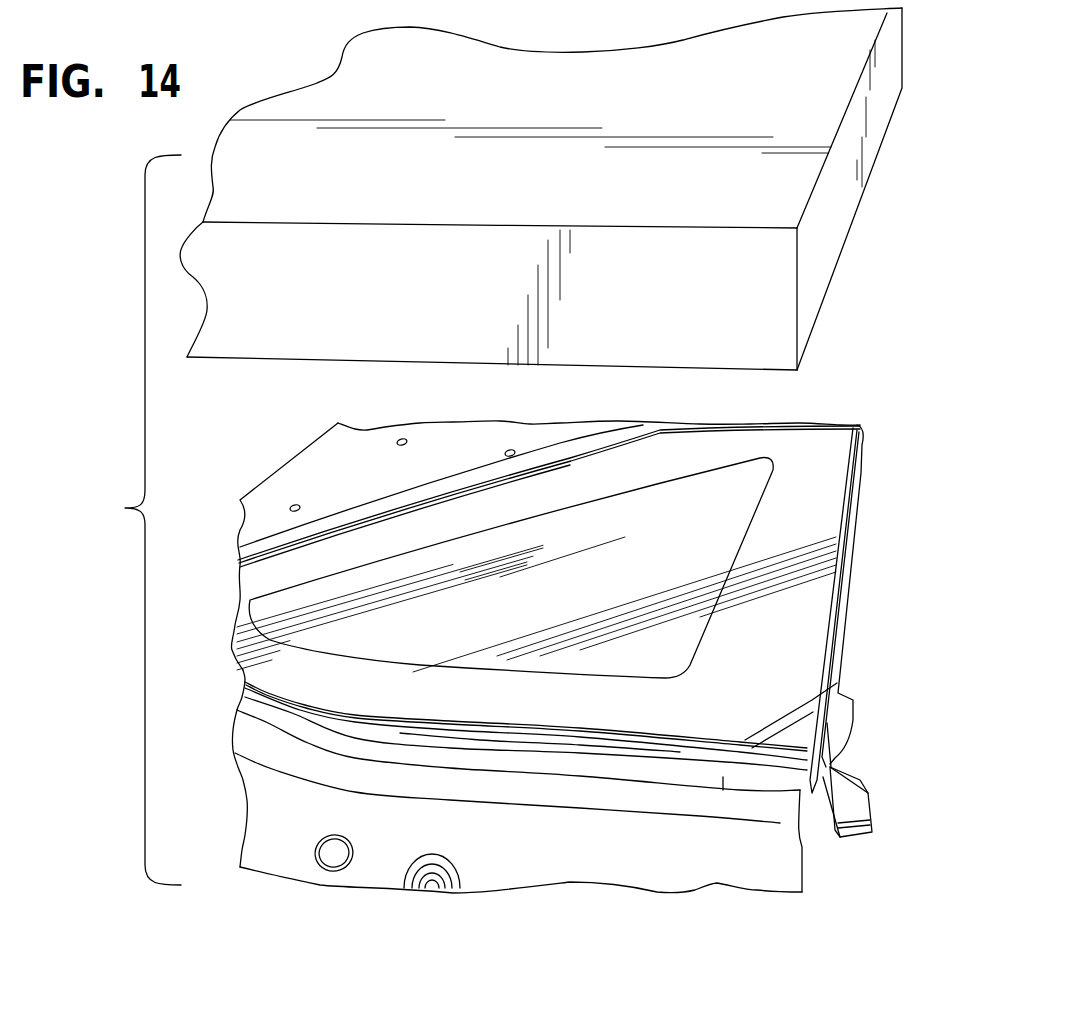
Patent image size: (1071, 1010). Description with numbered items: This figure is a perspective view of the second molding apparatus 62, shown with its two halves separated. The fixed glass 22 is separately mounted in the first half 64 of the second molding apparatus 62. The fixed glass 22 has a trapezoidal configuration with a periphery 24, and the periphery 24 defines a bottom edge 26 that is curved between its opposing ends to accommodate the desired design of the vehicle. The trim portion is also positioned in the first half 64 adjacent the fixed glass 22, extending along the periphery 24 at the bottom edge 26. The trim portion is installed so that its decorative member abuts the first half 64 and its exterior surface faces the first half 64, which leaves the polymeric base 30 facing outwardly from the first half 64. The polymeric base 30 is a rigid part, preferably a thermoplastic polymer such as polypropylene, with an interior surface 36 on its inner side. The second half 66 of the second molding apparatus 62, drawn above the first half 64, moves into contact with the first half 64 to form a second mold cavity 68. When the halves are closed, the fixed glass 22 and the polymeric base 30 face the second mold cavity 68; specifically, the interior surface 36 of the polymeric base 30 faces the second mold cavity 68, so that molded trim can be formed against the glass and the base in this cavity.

The fixed glass 22 is at (825, 498).
The periphery 24 is at (570, 467).
The bottom edge 26 is at (610, 730).
The polymeric base 30 is at (473, 760).
The interior surface 36 is at (723, 777).
The second molding apparatus 62 is at (850, 380).
The first half 64 is at (815, 824).
The second half 66 is at (828, 227).
The second mold cavity 68 is at (363, 517).